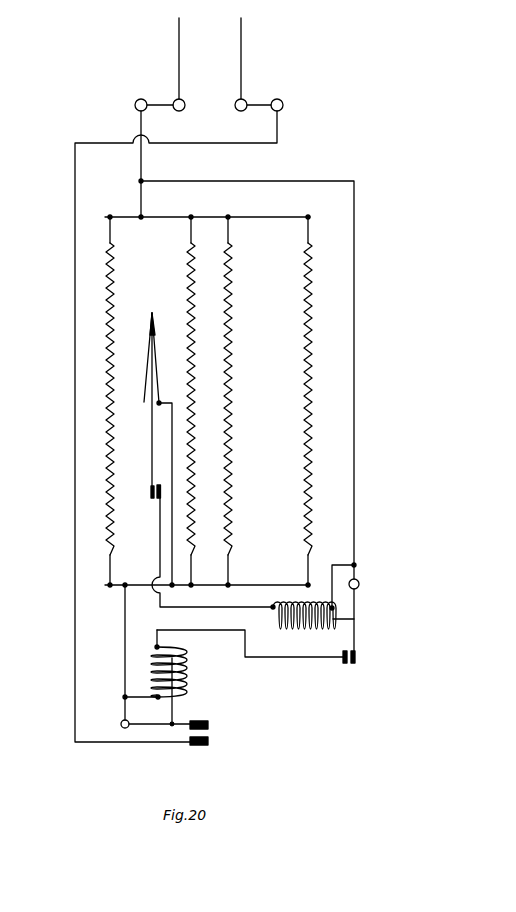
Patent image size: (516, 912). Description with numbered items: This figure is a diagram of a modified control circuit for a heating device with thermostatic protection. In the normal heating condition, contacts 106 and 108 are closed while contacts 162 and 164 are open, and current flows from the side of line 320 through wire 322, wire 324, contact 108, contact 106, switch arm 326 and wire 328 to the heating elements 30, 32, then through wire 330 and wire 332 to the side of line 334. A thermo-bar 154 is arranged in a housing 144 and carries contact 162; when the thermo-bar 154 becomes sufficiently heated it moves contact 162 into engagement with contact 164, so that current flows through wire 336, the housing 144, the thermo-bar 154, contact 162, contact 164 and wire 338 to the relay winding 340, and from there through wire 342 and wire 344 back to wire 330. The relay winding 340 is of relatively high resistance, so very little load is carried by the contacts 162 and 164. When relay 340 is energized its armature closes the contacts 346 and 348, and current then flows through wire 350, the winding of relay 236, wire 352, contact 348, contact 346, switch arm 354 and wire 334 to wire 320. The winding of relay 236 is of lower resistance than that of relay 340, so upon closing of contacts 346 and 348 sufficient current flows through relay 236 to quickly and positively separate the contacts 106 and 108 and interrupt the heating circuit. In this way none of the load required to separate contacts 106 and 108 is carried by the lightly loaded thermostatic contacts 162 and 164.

The heating element 30 is at (112, 276).
The heating element 32 is at (230, 290).
The contact 106 is at (208, 725).
The contact 108 is at (208, 741).
The housing 144 is at (146, 352).
The thermo-bar 154 is at (151, 442).
The contact 162 is at (150, 491).
The contact 164 is at (159, 500).
The relay 236 is at (189, 687).
The side of line 320 is at (243, 41).
The wire 322 is at (261, 101).
The wire 324 is at (75, 290).
The switch arm 326 is at (153, 716).
The wire 328 is at (125, 647).
The wire 330 is at (141, 169).
The wire 332 is at (157, 100).
The side of line 334 is at (178, 33).
The wire 336 is at (166, 400).
The wire 338 is at (203, 607).
The relay winding 340 is at (303, 632).
The wire 342 is at (340, 565).
The wire 344 is at (343, 170).
The contact 346 is at (355, 665).
The contact 348 is at (344, 665).
The wire 350 is at (137, 696).
The wire 352 is at (275, 658).
The switch arm 354 is at (357, 606).